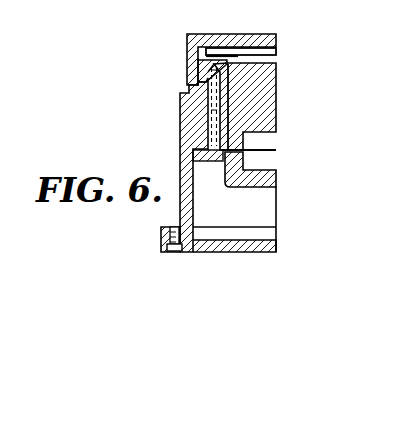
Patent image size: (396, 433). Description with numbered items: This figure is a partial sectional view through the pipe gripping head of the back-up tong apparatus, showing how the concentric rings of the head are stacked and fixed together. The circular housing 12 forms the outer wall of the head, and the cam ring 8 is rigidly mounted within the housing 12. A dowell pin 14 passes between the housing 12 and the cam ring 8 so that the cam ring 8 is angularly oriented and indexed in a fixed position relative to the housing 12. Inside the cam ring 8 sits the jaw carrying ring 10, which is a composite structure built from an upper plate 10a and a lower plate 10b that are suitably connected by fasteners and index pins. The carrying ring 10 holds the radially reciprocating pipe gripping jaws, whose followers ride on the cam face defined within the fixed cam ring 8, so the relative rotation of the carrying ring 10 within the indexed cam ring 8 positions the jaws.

The cam ring 8 is at (263, 91).
The jaw carrying ring 10 is at (187, 51).
The upper plate 10a is at (276, 37).
The lower plate 10b is at (268, 178).
The circular housing 12 is at (189, 141).
The dowell pins 14 is at (211, 107).